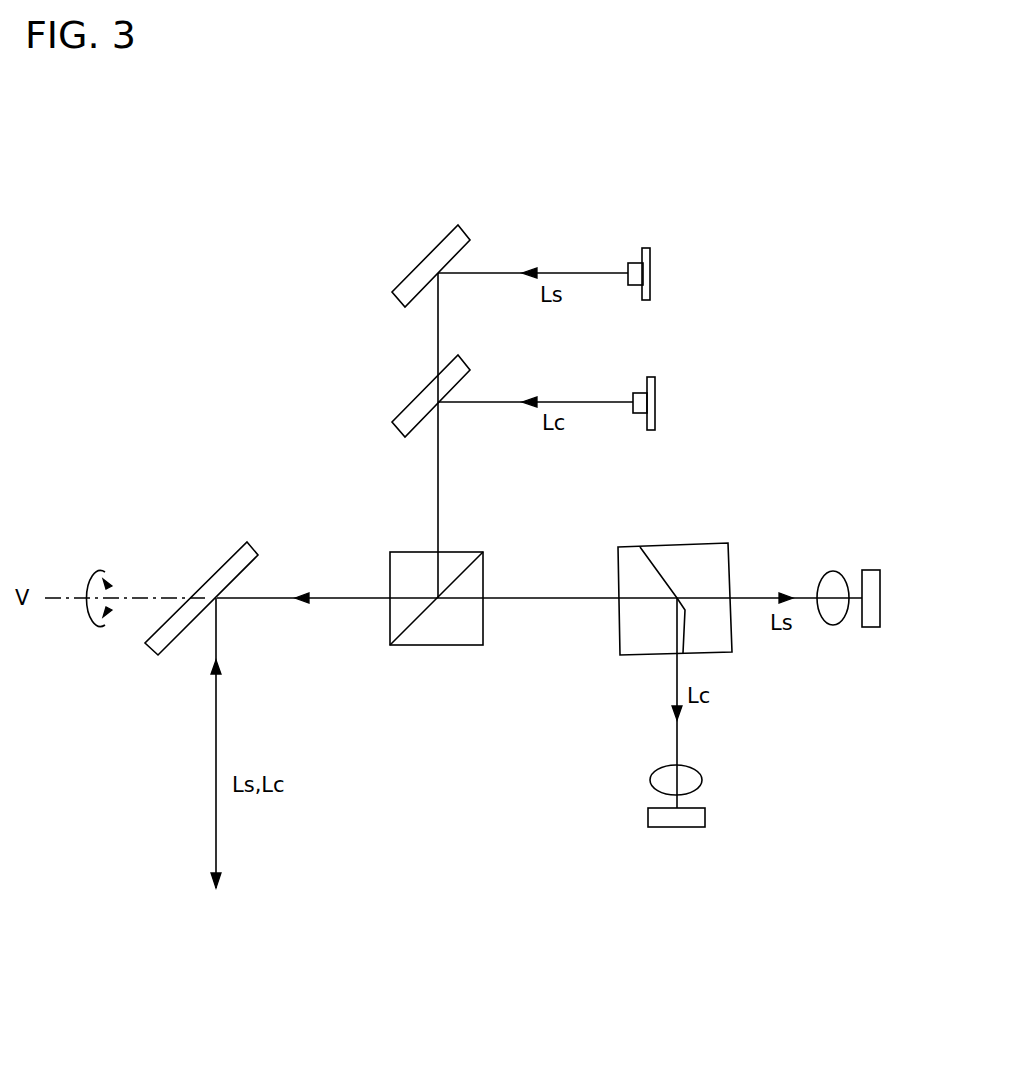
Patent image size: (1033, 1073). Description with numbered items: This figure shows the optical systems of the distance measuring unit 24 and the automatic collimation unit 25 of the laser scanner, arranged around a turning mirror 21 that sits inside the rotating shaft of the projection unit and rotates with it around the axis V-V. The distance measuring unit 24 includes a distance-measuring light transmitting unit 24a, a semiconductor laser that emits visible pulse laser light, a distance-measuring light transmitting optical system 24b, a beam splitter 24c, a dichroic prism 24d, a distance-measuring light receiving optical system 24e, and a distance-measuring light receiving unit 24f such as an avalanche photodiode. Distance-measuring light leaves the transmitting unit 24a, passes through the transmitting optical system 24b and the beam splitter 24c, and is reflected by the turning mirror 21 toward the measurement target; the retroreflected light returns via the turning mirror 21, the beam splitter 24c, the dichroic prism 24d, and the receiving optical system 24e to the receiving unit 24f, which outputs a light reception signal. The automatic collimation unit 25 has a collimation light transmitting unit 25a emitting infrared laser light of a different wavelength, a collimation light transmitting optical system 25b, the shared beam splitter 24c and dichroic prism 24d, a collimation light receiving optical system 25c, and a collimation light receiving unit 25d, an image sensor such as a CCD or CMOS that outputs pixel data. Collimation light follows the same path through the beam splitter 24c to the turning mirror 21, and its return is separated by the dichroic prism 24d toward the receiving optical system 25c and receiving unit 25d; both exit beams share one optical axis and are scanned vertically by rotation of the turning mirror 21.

The turning mirror 21 is at (247, 542).
The distance measuring unit 24 is at (664, 238).
The distance-measuring light transmitting unit 24a is at (650, 260).
The distance-measuring light transmitting optical system 24b is at (438, 242).
The beam splitter 24c is at (467, 550).
The dichroic prism 24d is at (712, 543).
The distance-measuring light receiving optical system 24e is at (817, 568).
The distance-measuring light receiving unit 24f is at (870, 570).
The automatic collimation unit 25 is at (664, 368).
The collimation light transmitting unit 25a is at (655, 388).
The collimation light transmitting optical system 25b is at (420, 390).
The collimation light receiving optical system 25c is at (710, 775).
The collimation light receiving unit 25d is at (705, 815).